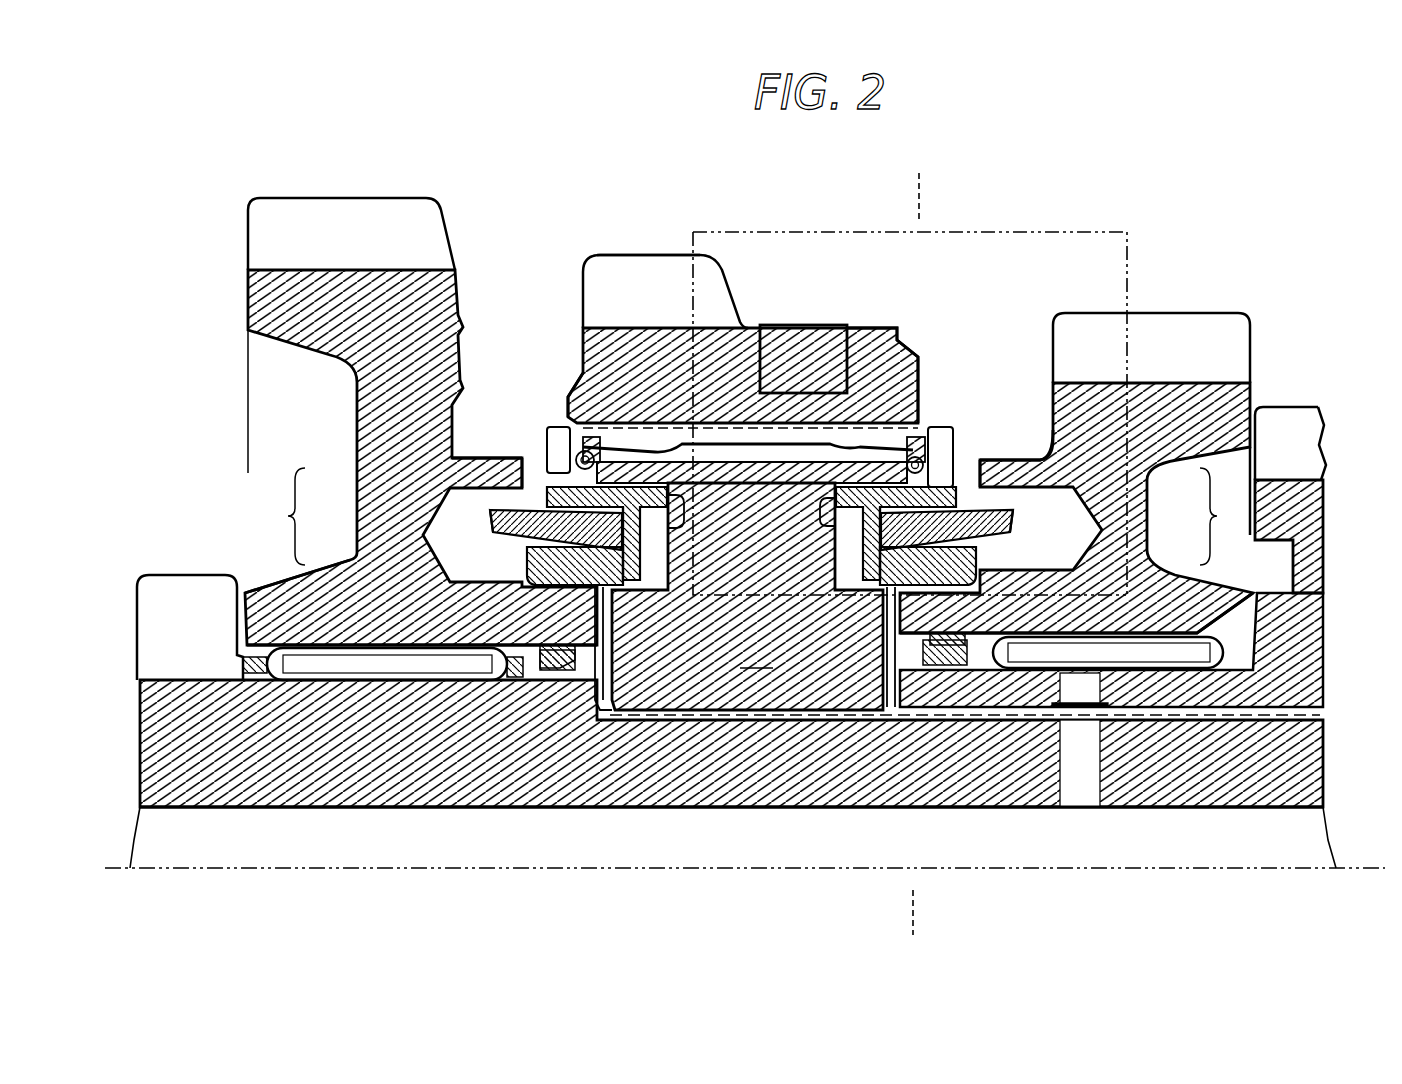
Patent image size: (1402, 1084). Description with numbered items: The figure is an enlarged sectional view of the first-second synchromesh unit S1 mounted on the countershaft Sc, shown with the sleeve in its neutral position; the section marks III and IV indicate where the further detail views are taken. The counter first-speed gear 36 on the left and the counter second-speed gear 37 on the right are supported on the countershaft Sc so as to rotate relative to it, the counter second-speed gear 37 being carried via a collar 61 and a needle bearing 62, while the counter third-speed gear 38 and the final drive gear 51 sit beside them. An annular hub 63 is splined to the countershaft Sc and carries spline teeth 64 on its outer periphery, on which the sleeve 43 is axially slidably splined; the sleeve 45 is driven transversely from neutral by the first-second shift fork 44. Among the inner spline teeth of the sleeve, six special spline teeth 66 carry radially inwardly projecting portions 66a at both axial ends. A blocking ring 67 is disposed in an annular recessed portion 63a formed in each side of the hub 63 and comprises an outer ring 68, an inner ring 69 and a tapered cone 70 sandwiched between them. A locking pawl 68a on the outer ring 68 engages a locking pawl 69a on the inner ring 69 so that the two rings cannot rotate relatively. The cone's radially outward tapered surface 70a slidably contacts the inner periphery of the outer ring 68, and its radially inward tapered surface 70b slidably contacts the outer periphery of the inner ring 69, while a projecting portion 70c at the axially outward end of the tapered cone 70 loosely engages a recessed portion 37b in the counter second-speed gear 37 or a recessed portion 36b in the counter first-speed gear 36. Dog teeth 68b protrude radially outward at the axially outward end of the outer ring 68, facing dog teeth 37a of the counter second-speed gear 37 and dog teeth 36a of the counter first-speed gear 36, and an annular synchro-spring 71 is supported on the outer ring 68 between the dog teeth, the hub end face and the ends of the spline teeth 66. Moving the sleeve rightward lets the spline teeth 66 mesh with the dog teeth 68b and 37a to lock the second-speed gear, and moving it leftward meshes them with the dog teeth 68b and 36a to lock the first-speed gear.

The counter first-speed gear 36 is at (393, 194).
The dog teeth 36a is at (470, 443).
The recessed portion 36b is at (446, 572).
The counter second-speed gear 37 is at (1262, 357).
The dog teeth 37a is at (1027, 440).
The recessed portion 37b is at (1117, 573).
The counter third-speed gear 38 is at (1275, 407).
The sleeve 43 is at (640, 268).
The first-second shift fork 44 is at (813, 325).
The sleeve 45 is at (876, 318).
The final drive gear 51 is at (170, 595).
The collar 61 is at (1190, 700).
The needle bearing 62 is at (365, 672).
The annular hub 63 is at (747, 596).
The annular recessed portion 63a is at (684, 520).
The spline teeth 64 is at (617, 330).
The spline teeth 66 is at (795, 456).
The projecting portions 66a is at (588, 436).
The blocking ring 67 is at (745, 516).
The outer ring 68 is at (536, 497).
The locking pawl 68a is at (645, 560).
The dog teeth 68b is at (483, 445).
The inner ring 69 is at (512, 555).
The locking pawl 69a is at (625, 560).
The tapered cone 70 is at (478, 530).
The radially outward tapered surface 70a is at (623, 540).
The radially inward tapered surface 70b is at (577, 594).
The projecting portion 70c is at (482, 527).
The synchro-spring 71 is at (553, 462).
The first-second synchromesh unit S1 is at (675, 192).
The countershaft Sc is at (590, 806).
The section line III is at (928, 183).
The detail region IV is at (1136, 256).